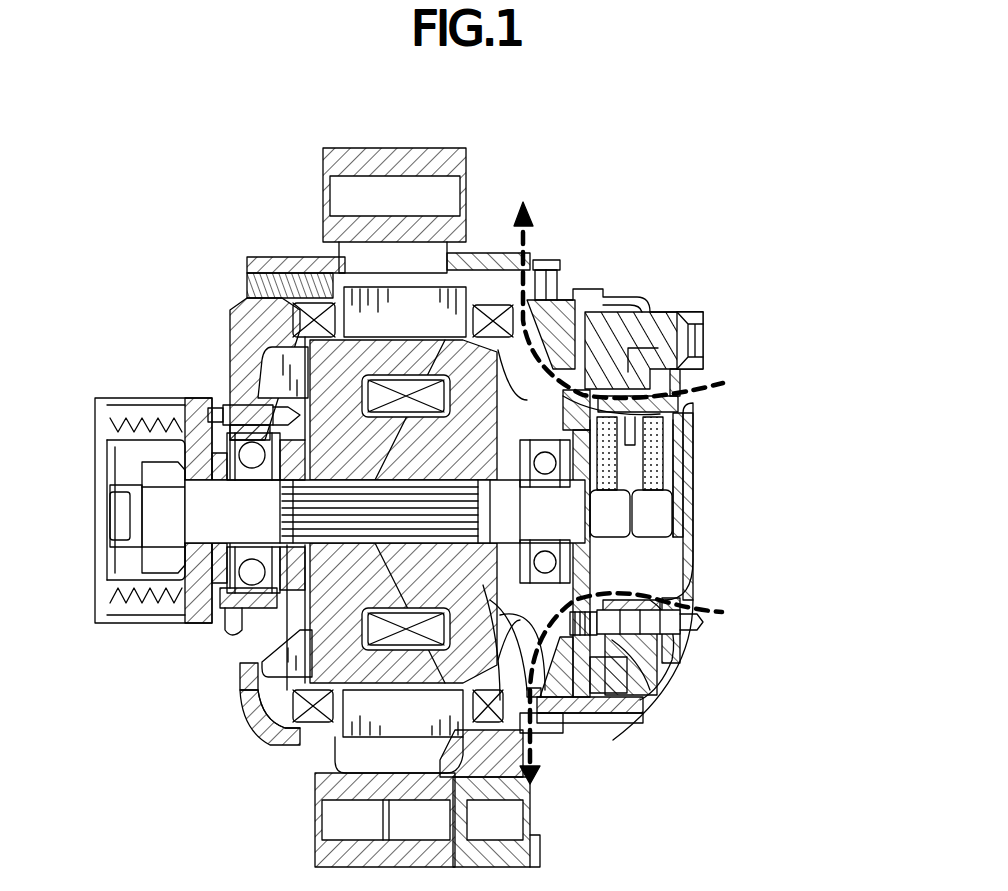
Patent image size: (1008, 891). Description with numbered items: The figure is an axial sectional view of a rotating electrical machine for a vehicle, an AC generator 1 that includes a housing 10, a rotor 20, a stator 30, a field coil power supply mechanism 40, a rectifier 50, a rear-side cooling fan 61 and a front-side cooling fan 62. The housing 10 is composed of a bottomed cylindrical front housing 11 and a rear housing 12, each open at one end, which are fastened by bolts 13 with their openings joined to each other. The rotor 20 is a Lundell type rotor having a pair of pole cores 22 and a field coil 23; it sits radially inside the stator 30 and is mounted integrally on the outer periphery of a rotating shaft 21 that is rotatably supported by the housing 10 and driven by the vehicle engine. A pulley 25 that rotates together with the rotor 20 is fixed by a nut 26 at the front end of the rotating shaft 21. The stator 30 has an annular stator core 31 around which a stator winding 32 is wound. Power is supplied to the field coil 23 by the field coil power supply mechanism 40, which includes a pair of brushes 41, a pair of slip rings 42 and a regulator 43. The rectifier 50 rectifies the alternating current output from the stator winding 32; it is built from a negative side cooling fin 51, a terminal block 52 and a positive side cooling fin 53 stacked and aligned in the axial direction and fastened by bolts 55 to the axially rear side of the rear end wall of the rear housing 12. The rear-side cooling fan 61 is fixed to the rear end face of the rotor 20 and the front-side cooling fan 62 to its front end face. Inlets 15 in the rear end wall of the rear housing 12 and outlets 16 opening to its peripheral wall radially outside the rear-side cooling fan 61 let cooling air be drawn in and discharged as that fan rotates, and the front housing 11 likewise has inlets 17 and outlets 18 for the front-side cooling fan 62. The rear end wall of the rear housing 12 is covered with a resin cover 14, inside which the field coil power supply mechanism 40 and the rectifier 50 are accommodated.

The AC generator 1 is at (552, 145).
The housing 10 is at (401, 446).
The front housing 11 is at (235, 357).
The rear housing 12 is at (572, 300).
The bolts 13 is at (548, 276).
The resin cover 14 is at (690, 543).
The inlets 15 is at (573, 392).
The outlets 16 is at (540, 760).
The inlets 17 is at (262, 632).
The outlets 18 is at (300, 735).
The rotor 20 is at (283, 332).
The rotating shaft 21 is at (235, 530).
The pole cores 22 is at (262, 705).
The field coil 23 is at (405, 640).
The pulley 25 is at (100, 585).
The nut 26 is at (162, 548).
The stator 30 is at (355, 290).
The stator core 31 is at (412, 315).
The stator winding 32 is at (300, 305).
The field coil power supply mechanism 40 is at (693, 380).
The brushes 41 is at (650, 458).
The slip rings 42 is at (652, 518).
The regulator 43 is at (655, 322).
The rectifier 50 is at (665, 648).
The negative side cooling fin 51 is at (600, 730).
The terminal block 52 is at (622, 722).
The positive side cooling fin 53 is at (650, 690).
The bolts 55 is at (706, 623).
The rear-side cooling fan 61 is at (548, 690).
The front-side cooling fan 62 is at (292, 655).